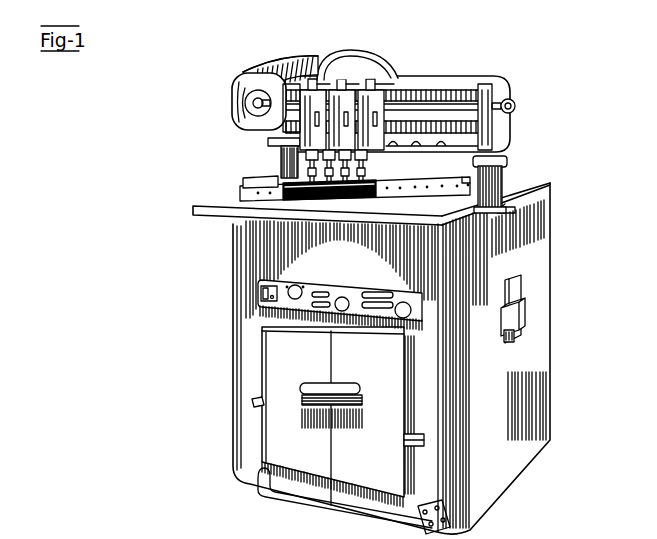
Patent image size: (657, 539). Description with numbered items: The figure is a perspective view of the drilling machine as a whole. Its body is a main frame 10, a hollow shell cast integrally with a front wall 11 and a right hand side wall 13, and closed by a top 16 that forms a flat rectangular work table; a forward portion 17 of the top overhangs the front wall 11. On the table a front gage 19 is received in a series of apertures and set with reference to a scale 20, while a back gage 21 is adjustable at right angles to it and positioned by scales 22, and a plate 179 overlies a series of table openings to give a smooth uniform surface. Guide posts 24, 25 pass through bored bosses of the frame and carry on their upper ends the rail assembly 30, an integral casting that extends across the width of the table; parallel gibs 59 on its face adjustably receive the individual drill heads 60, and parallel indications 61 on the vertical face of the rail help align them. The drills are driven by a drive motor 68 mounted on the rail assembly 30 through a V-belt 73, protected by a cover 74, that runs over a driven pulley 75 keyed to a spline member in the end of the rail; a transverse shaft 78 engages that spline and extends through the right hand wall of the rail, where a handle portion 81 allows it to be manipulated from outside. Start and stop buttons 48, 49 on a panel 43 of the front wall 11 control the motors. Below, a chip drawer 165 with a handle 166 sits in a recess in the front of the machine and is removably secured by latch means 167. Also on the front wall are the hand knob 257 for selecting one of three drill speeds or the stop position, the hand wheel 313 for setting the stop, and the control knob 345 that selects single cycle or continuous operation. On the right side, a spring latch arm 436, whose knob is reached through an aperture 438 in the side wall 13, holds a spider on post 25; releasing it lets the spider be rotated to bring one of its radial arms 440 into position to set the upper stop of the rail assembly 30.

The main frame 10 is at (218, 248).
The front wall 11 is at (247, 458).
The right hand side wall 13 is at (543, 356).
The top 16 is at (541, 183).
The forward portion 17 is at (193, 212).
The gage 19 is at (256, 186).
The scale 20 is at (500, 214).
The back gage 21 is at (434, 184).
The scales 22 is at (503, 184).
The guide post 24 is at (281, 170).
The guide post 25 is at (497, 172).
The rail assembly 30 is at (447, 76).
The panel 43 is at (384, 298).
The start button 48 is at (261, 289).
The stop button 49 is at (262, 302).
The gibs 59 is at (468, 92).
The drill heads 60 is at (301, 81).
The parallel indications 61 is at (429, 91).
The drive motor 68 is at (348, 51).
The V-belt 73 is at (275, 68).
The cover 74 is at (244, 84).
The driven pulley 75 is at (243, 105).
The transverse shaft 78 is at (409, 108).
The handle portion 81 is at (516, 106).
The chip drawer 165 is at (280, 372).
The handle 166 is at (352, 412).
The latch means 167 is at (252, 403).
The plate 179 is at (503, 210).
The hand knob 257 is at (294, 285).
The hand wheel 313 is at (341, 297).
The control knob 345 is at (410, 313).
The spring latch arm 436 is at (517, 344).
The aperture 438 is at (514, 333).
The arms 440 is at (514, 288).